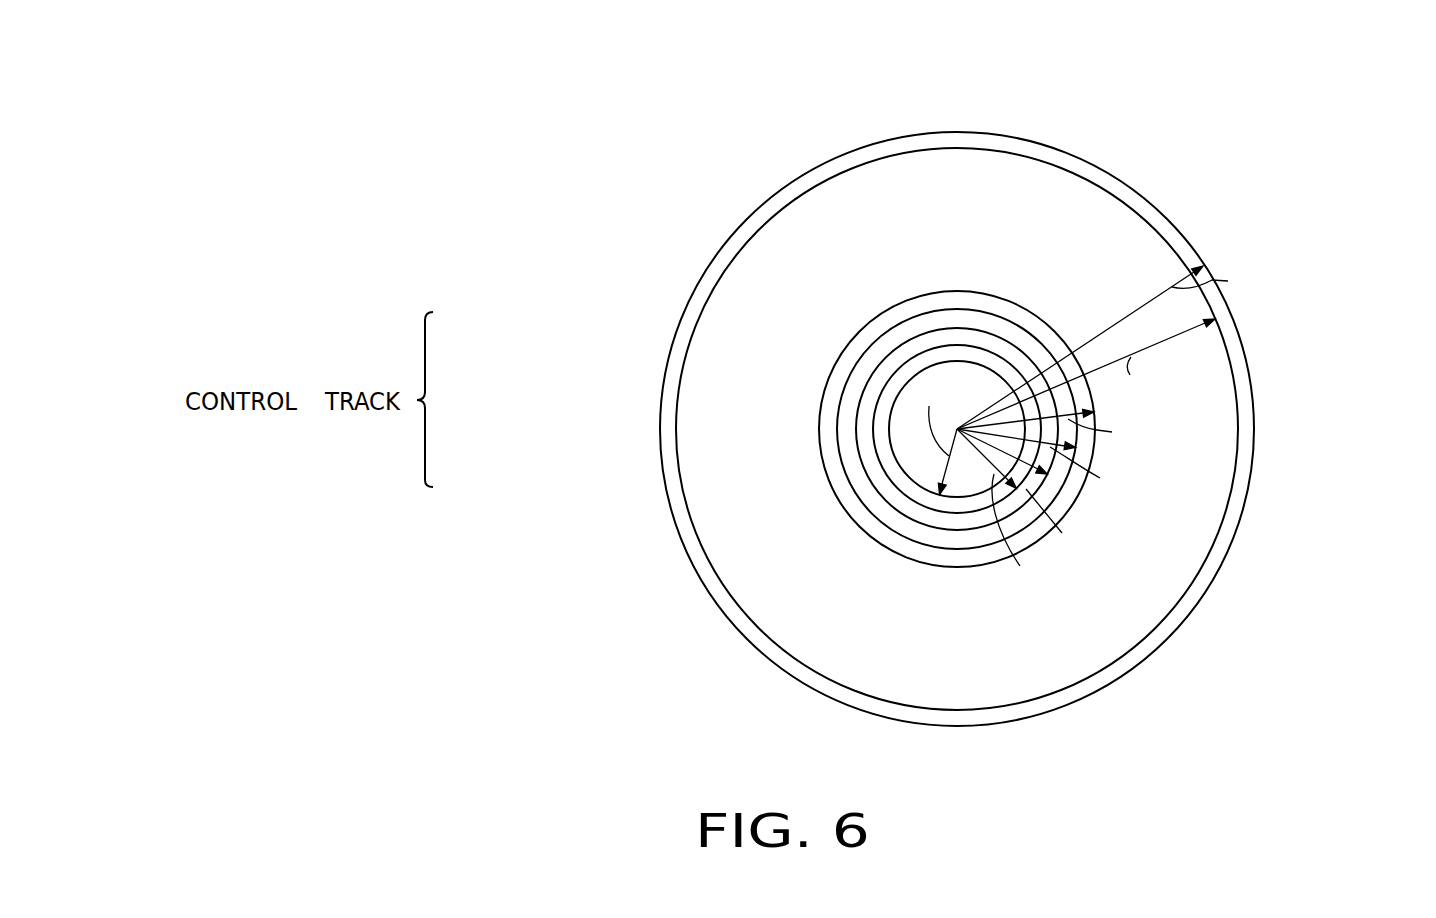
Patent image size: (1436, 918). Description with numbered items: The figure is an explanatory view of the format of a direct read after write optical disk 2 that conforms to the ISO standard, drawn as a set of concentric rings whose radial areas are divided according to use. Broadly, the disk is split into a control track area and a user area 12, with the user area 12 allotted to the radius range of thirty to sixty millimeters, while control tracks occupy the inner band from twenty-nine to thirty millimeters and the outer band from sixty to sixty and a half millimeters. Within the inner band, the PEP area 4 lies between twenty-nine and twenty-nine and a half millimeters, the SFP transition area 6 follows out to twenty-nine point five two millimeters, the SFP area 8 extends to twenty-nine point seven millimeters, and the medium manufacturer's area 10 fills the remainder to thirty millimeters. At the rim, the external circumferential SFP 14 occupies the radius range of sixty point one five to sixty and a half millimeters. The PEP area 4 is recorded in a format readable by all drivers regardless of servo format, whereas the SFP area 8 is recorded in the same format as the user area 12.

The optical disk 2 is at (957, 128).
The PEP area 4 is at (888, 397).
The SFP transition area 6 is at (863, 428).
The SFP area 8 is at (847, 456).
The medium manufacturer's area 10 is at (957, 300).
The user area 12 is at (1130, 238).
The external circumferential SFP 14 is at (823, 183).